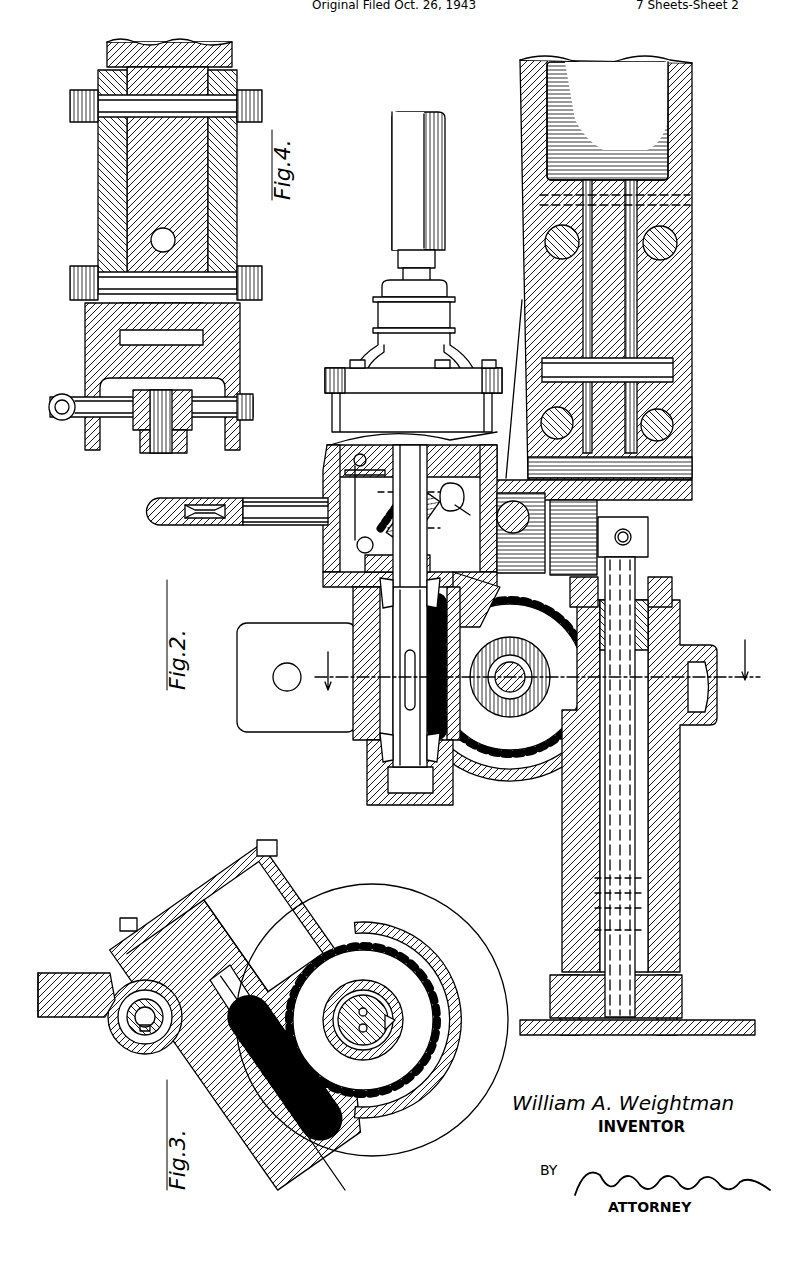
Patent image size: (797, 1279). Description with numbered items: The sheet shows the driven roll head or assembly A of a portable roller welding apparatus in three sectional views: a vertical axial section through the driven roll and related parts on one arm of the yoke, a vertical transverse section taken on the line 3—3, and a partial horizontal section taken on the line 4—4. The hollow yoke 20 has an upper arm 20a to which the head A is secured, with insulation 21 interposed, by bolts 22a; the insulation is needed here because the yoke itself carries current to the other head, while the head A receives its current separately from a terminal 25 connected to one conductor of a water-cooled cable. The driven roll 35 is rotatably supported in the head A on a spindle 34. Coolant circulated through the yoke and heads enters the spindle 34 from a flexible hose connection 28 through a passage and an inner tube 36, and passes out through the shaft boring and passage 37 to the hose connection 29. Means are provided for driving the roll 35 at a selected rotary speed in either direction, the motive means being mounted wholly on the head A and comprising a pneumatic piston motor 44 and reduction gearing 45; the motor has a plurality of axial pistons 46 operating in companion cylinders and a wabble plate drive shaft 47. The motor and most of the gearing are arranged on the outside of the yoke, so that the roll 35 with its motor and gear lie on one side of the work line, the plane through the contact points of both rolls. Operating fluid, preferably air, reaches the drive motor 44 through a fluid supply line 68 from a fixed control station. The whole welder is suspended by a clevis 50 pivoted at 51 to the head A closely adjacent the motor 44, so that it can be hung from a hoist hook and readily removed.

In FIG. 4, the yoke 20 is at (160, 45).
In FIG. 2, the yoke 20 is at (572, 62).
In FIG. 4, the upper arm 20a is at (200, 190).
In FIG. 2, the upper arm 20a is at (530, 262).
In FIG. 4, the insulation 21 is at (125, 208).
In FIG. 2, the insulation 21 is at (675, 252).
In FIG. 4, the bolts 22a is at (108, 100).
In FIG. 2, the bolts 22a is at (548, 235).
In FIG. 2, the terminal 25 is at (272, 640).
In FIG. 3, the terminal 25 is at (60, 976).
In FIG. 4, the hose connection 28 is at (62, 422).
In FIG. 4, the hose connection 29 is at (250, 400).
In FIG. 2, the spindle 34 is at (580, 895).
In FIG. 3, the spindle 34 is at (372, 993).
In FIG. 2, the driven roll 35 is at (545, 1022).
In FIG. 3, the driven roll 35 is at (470, 935).
In FIG. 4, the inner tube 36 is at (155, 453).
In FIG. 2, the inner tube 36 is at (622, 887).
In FIG. 3, the inner tube 36 is at (360, 1010).
In FIG. 4, the passage 37 is at (175, 455).
In FIG. 2, the passage 37 is at (640, 540).
In FIG. 3, the passage 37 is at (385, 1060).
In FIG. 2, the pneumatic piston motor 44 is at (326, 475).
In FIG. 2, the reduction gearing 45 is at (508, 756).
In FIG. 3, the reduction gearing 45 is at (308, 895).
In FIG. 2, the axial pistons 46 is at (340, 445).
In FIG. 2, the wabble plate drive shaft 47 is at (398, 625).
In FIG. 3, the wabble plate drive shaft 47 is at (130, 1000).
In FIG. 2, the clevis 50 is at (158, 518).
In FIG. 2, the pivot 51 is at (522, 530).
In FIG. 2, the fluid supply line 68 is at (400, 205).
In FIG. 2, the section line 3- 3 is at (537, 659).
In FIG. 2, the section line 4- 4 is at (573, 537).
In FIG. 4, the driven roll head A is at (235, 345).
In FIG. 2, the driven roll head A is at (701, 489).
In FIG. 3, the driven roll head A is at (449, 1092).